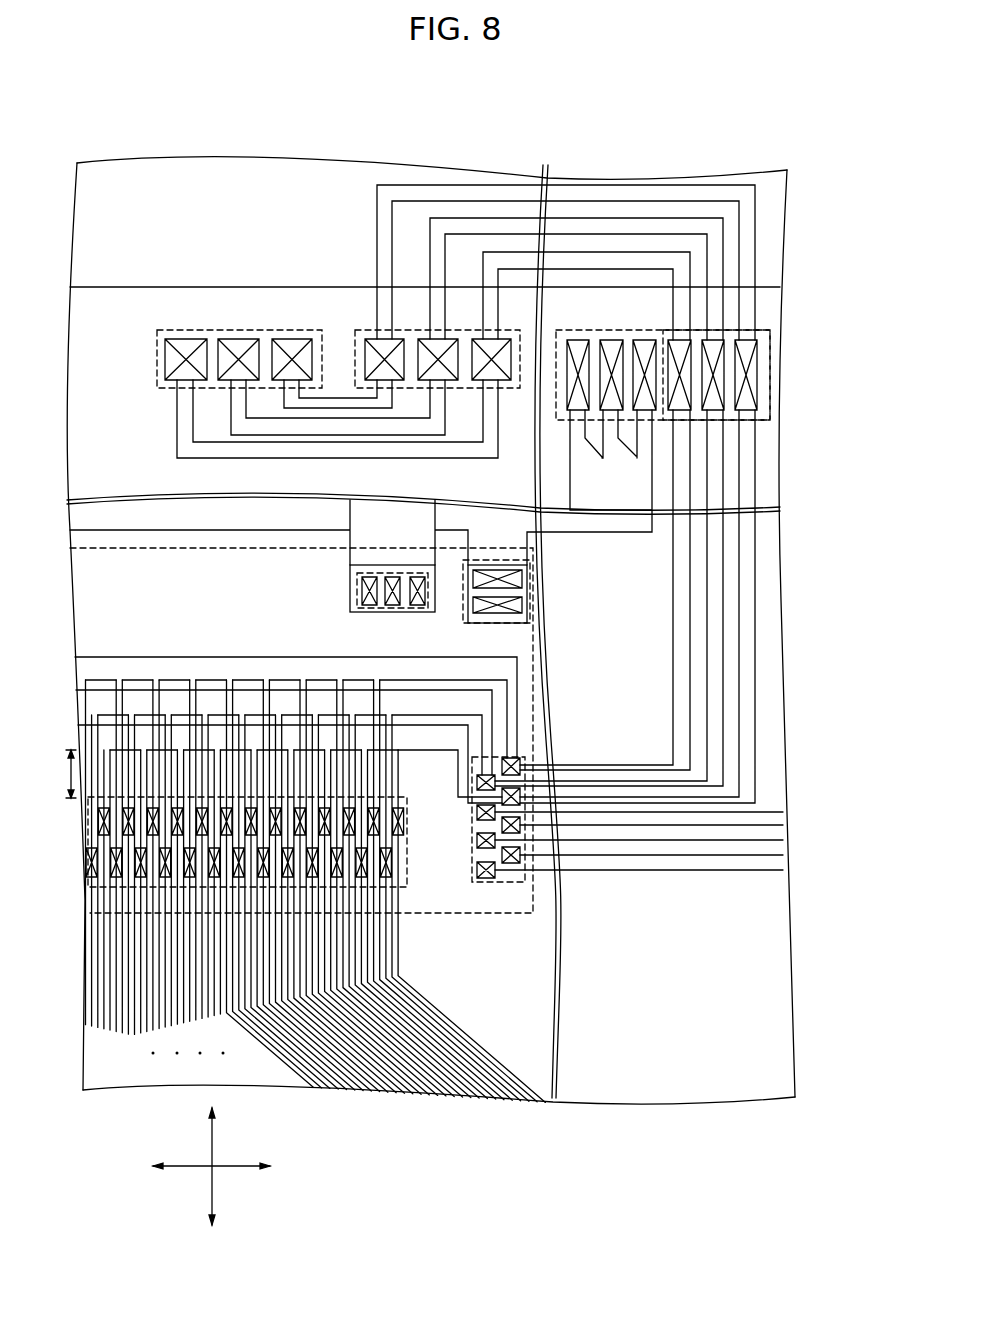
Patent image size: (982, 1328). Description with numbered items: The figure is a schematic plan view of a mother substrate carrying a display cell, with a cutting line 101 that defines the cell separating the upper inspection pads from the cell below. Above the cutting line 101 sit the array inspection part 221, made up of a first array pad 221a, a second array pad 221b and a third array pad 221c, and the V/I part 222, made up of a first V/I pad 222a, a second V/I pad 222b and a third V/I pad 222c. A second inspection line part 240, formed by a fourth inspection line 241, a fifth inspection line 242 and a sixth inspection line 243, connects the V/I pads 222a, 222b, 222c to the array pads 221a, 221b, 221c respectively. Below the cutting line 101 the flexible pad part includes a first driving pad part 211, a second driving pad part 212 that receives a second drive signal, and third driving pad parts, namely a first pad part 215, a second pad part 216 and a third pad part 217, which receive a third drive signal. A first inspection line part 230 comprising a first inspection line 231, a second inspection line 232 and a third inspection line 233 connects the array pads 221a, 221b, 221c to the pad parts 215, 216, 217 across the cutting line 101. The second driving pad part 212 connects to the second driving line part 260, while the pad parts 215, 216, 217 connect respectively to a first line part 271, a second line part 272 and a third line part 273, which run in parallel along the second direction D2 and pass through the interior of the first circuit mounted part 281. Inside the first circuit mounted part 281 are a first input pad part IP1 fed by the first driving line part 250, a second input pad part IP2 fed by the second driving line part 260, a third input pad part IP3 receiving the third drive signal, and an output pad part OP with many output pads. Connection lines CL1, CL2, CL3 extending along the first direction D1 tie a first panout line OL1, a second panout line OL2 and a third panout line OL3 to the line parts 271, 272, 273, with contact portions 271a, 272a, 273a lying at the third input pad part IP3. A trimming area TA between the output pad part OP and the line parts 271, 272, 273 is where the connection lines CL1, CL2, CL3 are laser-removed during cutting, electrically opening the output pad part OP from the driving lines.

The cutting line 101 is at (93, 286).
The first driving pad part 211 is at (770, 340).
The second driving pad part 212 is at (589, 339).
The first pad part 215 is at (757, 368).
The second pad part 216 is at (718, 392).
The third pad part 217 is at (683, 405).
The array inspection part 221 is at (362, 330).
The first array pad 221a is at (392, 385).
The second array pad 221b is at (445, 385).
The third array pad 221c is at (498, 385).
The V/I part 222 is at (157, 355).
The first V/I pad 222a is at (290, 339).
The second V/I pad 222b is at (237, 339).
The third V/I pad 222c is at (180, 339).
The first inspection line part 230 is at (566, 220).
The first inspection line 231 is at (497, 185).
The second inspection line 232 is at (490, 201).
The third inspection line 233 is at (510, 133).
The second inspection line part 240 is at (381, 488).
The fourth inspection line 241 is at (285, 412).
The fifth inspection line 242 is at (326, 436).
The sixth inspection line 243 is at (364, 458).
The first driving line part 250 is at (602, 533).
The second driving line part 260 is at (435, 524).
The first line part 271 is at (450, 730).
The second line part 272 is at (413, 697).
The third line part 273 is at (370, 662).
The contact portion 271a is at (522, 792).
The contact portion 272a is at (498, 775).
The contact portion 273a is at (522, 758).
The first circuit mounted part 281 is at (155, 548).
The first input pad part IP1 is at (505, 623).
The second input pad part IP2 is at (357, 603).
The third input pad part IP3 is at (563, 786).
The first connection line CL1 is at (400, 763).
The second connection line CL2 is at (400, 785).
The third connection line CL3 is at (385, 803).
The first panout line OL1 is at (398, 970).
The second panout line OL2 is at (388, 950).
The third panout line OL3 is at (380, 930).
The output pad part OP is at (98, 887).
The trimming area TA is at (59, 774).
The first direction D1 is at (213, 1178).
The second direction D2 is at (225, 1166).